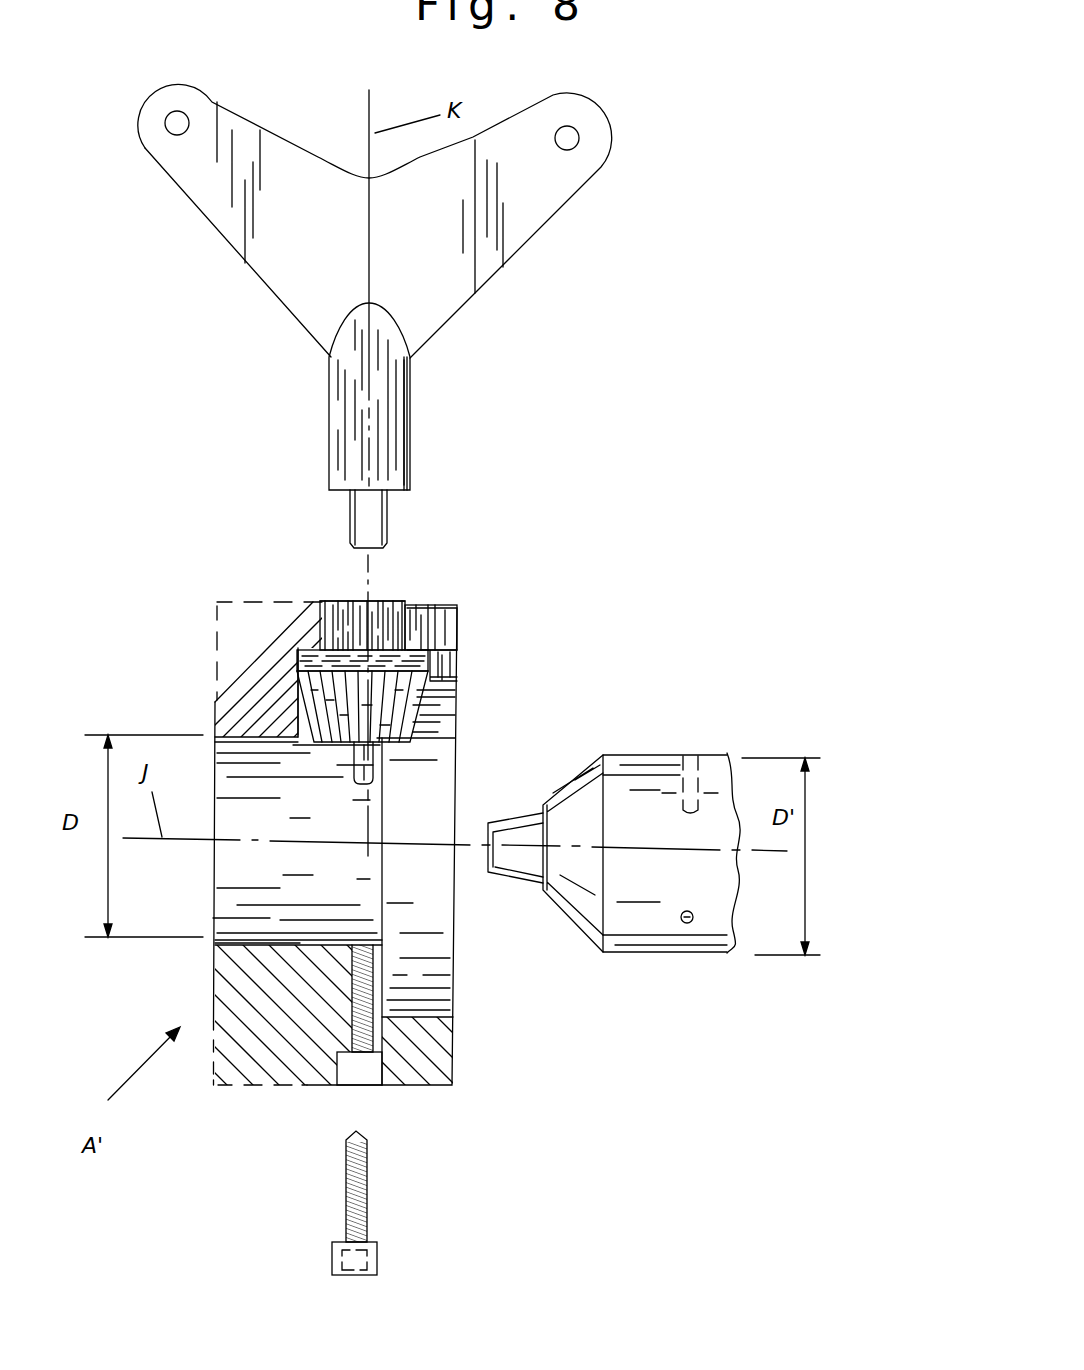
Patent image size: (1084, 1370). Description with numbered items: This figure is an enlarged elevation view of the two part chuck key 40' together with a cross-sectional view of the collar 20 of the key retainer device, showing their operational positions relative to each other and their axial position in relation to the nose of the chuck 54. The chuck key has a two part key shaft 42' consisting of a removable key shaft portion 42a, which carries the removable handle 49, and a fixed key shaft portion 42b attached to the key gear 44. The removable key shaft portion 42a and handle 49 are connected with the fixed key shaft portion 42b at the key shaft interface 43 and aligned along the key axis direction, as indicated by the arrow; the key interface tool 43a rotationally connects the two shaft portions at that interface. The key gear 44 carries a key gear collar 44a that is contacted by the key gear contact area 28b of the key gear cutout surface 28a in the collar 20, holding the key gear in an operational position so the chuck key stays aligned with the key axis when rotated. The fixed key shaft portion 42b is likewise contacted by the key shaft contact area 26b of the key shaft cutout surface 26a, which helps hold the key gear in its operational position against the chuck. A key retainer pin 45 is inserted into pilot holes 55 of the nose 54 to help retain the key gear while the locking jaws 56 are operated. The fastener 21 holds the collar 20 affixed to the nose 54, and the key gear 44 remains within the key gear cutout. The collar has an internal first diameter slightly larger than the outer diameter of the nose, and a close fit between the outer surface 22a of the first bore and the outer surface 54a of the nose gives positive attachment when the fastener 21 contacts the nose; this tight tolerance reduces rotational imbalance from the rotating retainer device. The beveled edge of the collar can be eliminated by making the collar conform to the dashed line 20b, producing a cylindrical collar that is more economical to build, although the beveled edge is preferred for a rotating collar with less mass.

The collar 20 is at (320, 873).
The dashed line 20b is at (210, 612).
The fastener 21 is at (363, 1217).
The outer surface of the first bore 22a is at (237, 940).
The key shaft cutout surface 26a is at (443, 628).
The key shaft contact area 26b is at (332, 603).
The key gear cutout surface 28a is at (308, 738).
The key gear contact area 28b is at (307, 645).
The two part chuck key 40' is at (409, 287).
The two part key shaft 42' is at (446, 396).
The removable key shaft portion 42a is at (412, 472).
The fixed key shaft portion 42b is at (408, 610).
The key shaft interface 43 is at (390, 514).
The key interface tool 43a is at (387, 528).
The key gear 44 is at (423, 710).
The key gear collar 44a is at (432, 664).
The key retainer pin 45 is at (385, 766).
The removable handle 49 is at (560, 215).
The nose of the chuck 54 is at (629, 838).
The outer surface of the nose 54a is at (671, 853).
The pilot holes 55 is at (708, 753).
The locking jaws 56 is at (522, 877).